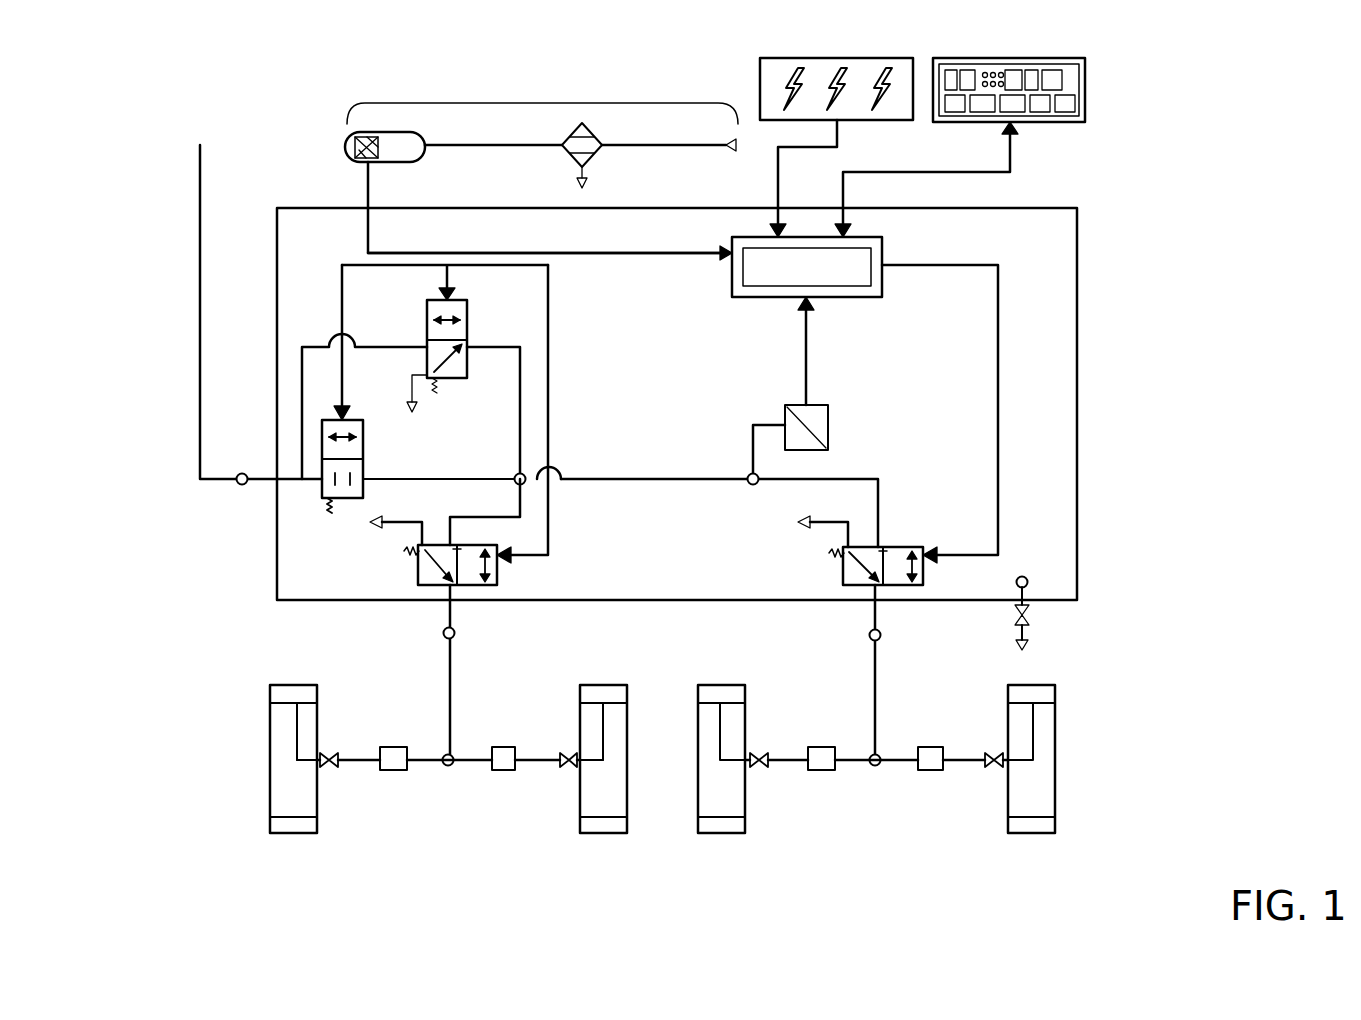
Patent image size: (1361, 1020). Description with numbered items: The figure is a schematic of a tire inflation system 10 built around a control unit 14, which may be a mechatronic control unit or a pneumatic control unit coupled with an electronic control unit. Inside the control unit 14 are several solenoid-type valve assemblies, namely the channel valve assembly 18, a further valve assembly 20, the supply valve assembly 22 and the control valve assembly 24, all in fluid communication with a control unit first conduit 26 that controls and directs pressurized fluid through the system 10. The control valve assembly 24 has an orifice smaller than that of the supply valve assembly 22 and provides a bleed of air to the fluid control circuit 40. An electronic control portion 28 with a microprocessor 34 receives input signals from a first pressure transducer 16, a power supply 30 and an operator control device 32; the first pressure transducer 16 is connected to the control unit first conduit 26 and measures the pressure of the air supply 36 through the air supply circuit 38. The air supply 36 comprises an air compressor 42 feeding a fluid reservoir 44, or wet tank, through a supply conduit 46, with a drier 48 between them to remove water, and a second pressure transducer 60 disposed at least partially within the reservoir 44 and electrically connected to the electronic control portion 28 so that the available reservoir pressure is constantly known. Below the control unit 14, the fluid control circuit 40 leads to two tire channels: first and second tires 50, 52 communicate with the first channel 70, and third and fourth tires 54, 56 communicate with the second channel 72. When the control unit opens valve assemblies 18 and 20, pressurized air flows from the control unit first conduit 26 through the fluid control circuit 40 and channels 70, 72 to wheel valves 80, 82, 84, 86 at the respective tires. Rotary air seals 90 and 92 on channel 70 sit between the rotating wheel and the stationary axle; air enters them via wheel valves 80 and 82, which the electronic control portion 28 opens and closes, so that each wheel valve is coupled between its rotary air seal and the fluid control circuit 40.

The tire inflation system 10 is at (1088, 168).
The control unit 14 is at (1062, 246).
The first pressure transducer 16 is at (785, 412).
The channel valve assembly 18 is at (416, 576).
The valve assembly 20 is at (845, 560).
The supply valve assembly 22 is at (365, 432).
The control valve assembly 24 is at (470, 360).
The control unit first conduit 26 is at (662, 478).
The electronic control portion 28 is at (724, 250).
The power supply 30 is at (830, 58).
The operator control device 32 is at (1008, 58).
The microprocessor 34 is at (882, 267).
The air supply 36 is at (545, 103).
The air supply circuit 38 is at (200, 333).
The fluid control circuit 40 is at (447, 673).
The air compressor 42 is at (700, 149).
The fluid reservoir 44 is at (370, 165).
The supply conduit 46 is at (488, 148).
The drier 48 is at (593, 157).
The first tire 50 is at (285, 685).
The second tire 52 is at (606, 685).
The third tire 54 is at (724, 685).
The fourth tire 56 is at (1028, 833).
The second pressure transducer 60 is at (352, 136).
The first tire channel 70 is at (420, 810).
The second tire channel 72 is at (835, 822).
The wheel valve 80 is at (330, 752).
The wheel valve 82 is at (562, 752).
The wheel valve 84 is at (755, 754).
The wheel valve 86 is at (990, 754).
The rotary air seal 90 is at (300, 760).
The rotary air seal 92 is at (603, 760).